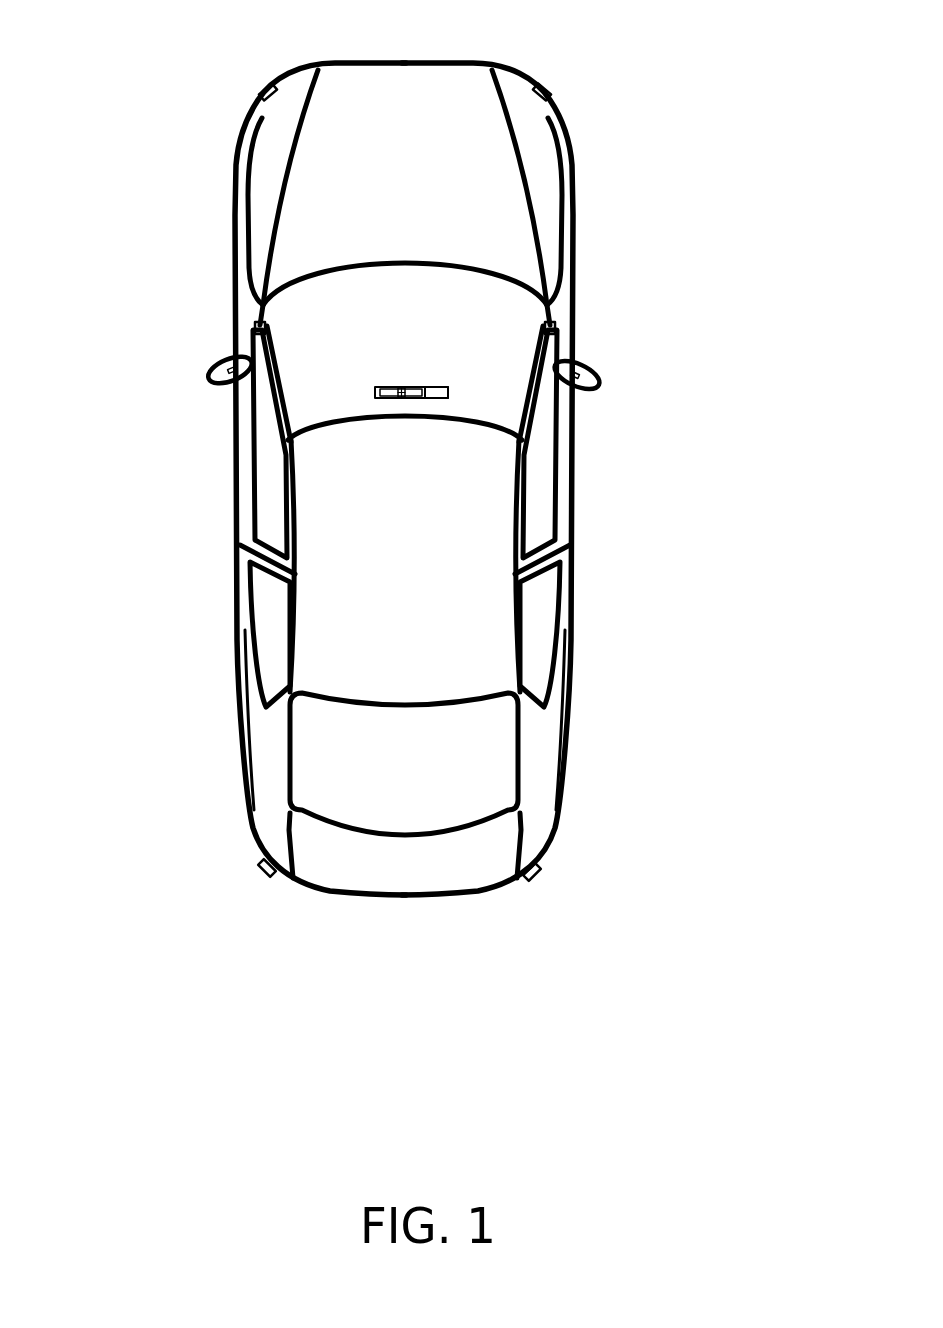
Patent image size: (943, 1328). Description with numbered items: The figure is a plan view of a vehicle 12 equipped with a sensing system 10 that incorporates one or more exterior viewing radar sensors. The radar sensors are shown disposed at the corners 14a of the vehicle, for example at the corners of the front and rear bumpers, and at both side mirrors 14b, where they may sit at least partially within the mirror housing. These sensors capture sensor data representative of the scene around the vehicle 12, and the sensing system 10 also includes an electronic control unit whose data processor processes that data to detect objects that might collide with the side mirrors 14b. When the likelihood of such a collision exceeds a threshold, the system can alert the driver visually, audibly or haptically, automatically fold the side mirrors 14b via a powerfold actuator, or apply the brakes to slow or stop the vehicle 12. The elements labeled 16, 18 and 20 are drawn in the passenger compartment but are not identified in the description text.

The sensing system 10 is at (127, 101).
The vehicle 12 is at (708, 120).
The corners 14a is at (263, 86).
The side mirrors 14b is at (211, 384).
The interior sensor device 16 is at (387, 388).
The camera 18 is at (410, 387).
The controller 20 is at (450, 388).